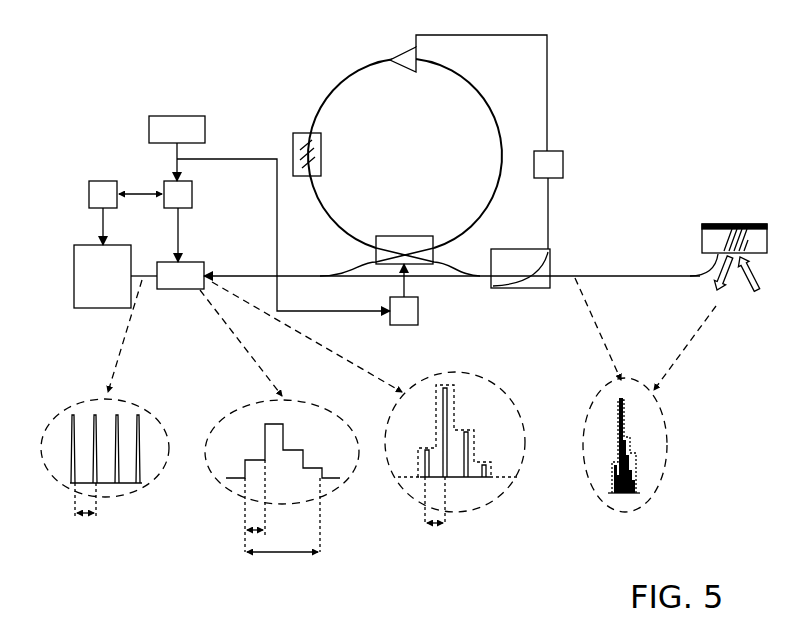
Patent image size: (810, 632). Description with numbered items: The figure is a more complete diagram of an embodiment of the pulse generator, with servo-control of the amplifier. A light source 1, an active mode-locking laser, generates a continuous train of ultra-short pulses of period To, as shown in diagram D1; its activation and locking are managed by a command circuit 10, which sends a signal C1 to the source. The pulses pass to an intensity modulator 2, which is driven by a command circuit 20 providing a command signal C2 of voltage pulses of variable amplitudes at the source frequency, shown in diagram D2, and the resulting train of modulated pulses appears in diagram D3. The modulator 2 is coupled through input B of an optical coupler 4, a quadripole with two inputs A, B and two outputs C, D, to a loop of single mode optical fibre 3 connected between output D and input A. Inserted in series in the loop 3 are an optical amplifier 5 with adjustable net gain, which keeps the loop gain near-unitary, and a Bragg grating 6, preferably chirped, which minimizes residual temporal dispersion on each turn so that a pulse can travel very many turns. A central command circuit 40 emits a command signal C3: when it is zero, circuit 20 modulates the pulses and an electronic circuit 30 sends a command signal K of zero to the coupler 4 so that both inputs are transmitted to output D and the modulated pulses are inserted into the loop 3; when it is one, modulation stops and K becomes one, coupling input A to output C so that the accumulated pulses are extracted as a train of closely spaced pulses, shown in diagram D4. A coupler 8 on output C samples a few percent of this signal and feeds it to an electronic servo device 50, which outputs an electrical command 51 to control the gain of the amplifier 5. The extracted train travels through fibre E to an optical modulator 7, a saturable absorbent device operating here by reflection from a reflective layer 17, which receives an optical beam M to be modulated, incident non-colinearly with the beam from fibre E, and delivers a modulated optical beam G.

The light source 1 is at (103, 310).
The intensity modulator 2 is at (180, 290).
The loop of single mode optical fibre 3 is at (472, 83).
The optical coupler 4 is at (406, 236).
The optical amplifier 5 is at (405, 66).
The Bragg grating 6 is at (293, 152).
The optical modulator 7 is at (703, 232).
The coupler 8 is at (508, 289).
The command circuit 10 is at (89, 195).
The reflective layer 17 is at (735, 224).
The command circuit 20 is at (192, 192).
The electronic circuit 30 is at (418, 324).
The central command circuit 40 is at (177, 115).
The electronic servo device 50 is at (563, 165).
The electrical command 51 is at (403, 50).
The command signal K is at (408, 286).
The fibre E is at (631, 273).
The modulated optical beam G is at (714, 283).
The optical beam to be modulated M is at (757, 279).
The command signal 1 C1 is at (103, 228).
The command signal C2 is at (180, 225).
The command signal C3 is at (177, 159).
The diagram D1 is at (142, 484).
The diagram D2 is at (232, 490).
The diagram D3 is at (405, 492).
The diagram D4 is at (594, 493).